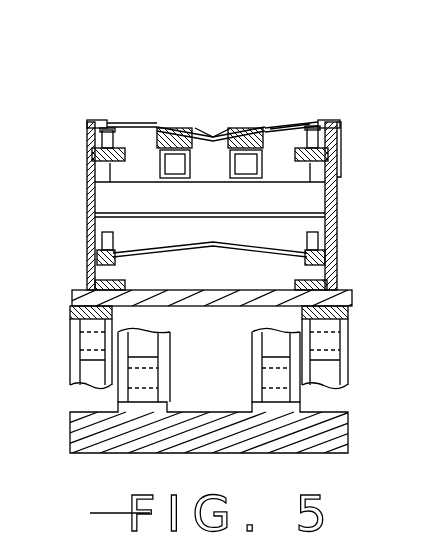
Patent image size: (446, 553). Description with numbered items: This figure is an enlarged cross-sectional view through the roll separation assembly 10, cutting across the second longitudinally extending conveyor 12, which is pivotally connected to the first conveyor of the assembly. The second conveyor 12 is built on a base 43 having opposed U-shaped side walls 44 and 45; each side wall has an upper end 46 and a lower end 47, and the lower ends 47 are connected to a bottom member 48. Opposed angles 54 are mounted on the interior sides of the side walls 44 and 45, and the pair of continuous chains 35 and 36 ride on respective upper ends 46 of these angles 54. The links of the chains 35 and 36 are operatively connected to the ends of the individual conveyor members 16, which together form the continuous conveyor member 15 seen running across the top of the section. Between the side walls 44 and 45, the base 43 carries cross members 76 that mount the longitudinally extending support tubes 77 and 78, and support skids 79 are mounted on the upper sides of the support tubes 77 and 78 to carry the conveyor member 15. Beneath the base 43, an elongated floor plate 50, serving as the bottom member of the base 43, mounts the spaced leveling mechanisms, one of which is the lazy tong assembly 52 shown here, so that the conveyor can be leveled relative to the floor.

The roll separation assembly 10 is at (287, 118).
The second longitudinally extending conveyor 12 is at (115, 123).
The continuous conveyor member 15 is at (215, 118).
The conveyor members 16 is at (203, 118).
The continuous chain 35 is at (104, 121).
The continuous chain 36 is at (343, 119).
The base 43 is at (86, 190).
The side wall 44 is at (88, 228).
The side wall 45 is at (333, 192).
The upper ends 46 is at (110, 163).
The lower ends 47 is at (112, 282).
The bottom member 48 is at (190, 294).
The elongated floor plate 50 is at (349, 433).
The lazy tong assembly 52 is at (70, 360).
The opposed angles 54 is at (98, 263).
The cross members 76 is at (218, 232).
The support tube 77 is at (198, 169).
The support tube 78 is at (269, 169).
The support skids 79 is at (148, 126).